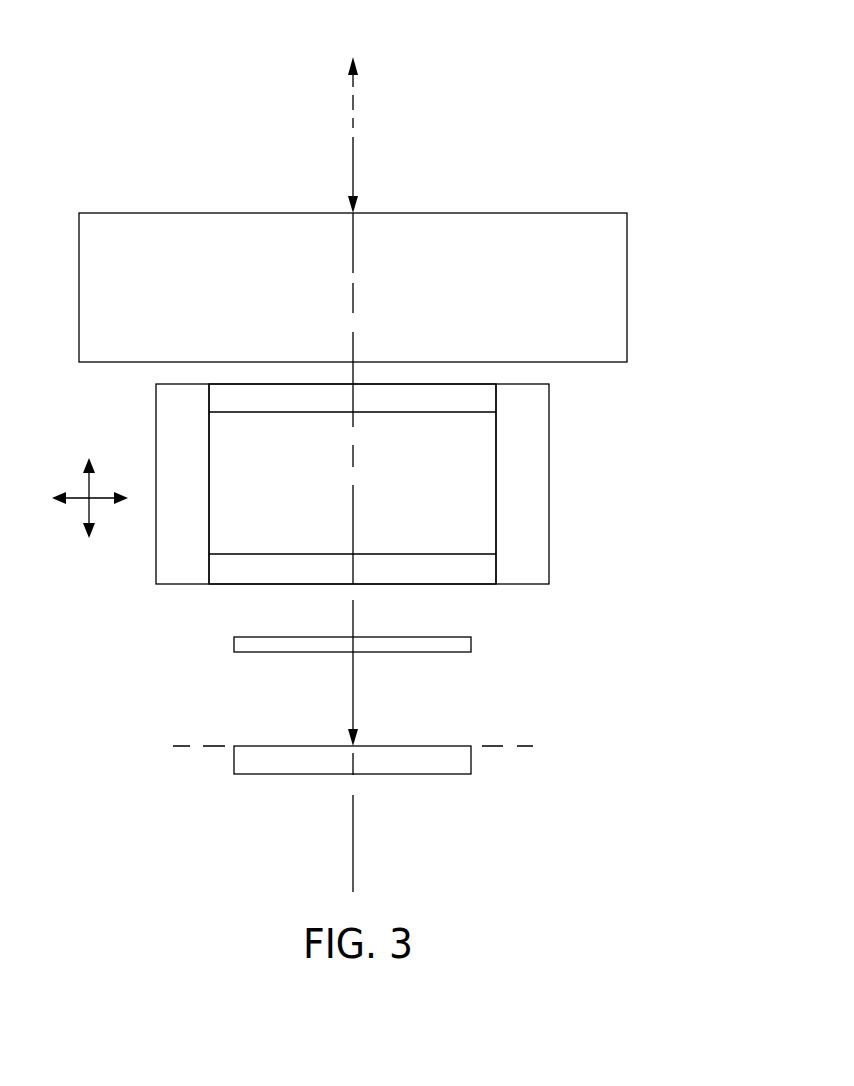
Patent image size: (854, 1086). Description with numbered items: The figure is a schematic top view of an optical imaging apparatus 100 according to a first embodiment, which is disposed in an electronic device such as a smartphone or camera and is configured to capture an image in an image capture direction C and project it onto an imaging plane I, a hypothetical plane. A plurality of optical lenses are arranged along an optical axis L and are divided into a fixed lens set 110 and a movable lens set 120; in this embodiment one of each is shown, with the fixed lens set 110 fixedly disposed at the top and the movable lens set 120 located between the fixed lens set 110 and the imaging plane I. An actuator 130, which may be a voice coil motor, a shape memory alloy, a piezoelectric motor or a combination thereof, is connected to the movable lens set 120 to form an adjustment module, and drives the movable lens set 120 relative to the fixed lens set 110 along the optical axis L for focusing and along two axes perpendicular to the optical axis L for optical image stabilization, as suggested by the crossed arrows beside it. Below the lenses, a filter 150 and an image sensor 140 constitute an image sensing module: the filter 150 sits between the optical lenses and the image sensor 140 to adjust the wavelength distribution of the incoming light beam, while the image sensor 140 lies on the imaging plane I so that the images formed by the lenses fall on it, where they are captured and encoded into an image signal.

The optical imaging apparatus 100 is at (486, 119).
The fixed lens set 110 is at (627, 303).
The movable lens set 120 is at (281, 554).
The actuator 130 is at (549, 508).
The image sensor 140 is at (471, 760).
The filter 150 is at (471, 641).
The image capture direction C is at (352, 105).
The imaging plane I is at (202, 746).
The optical axis L is at (352, 844).